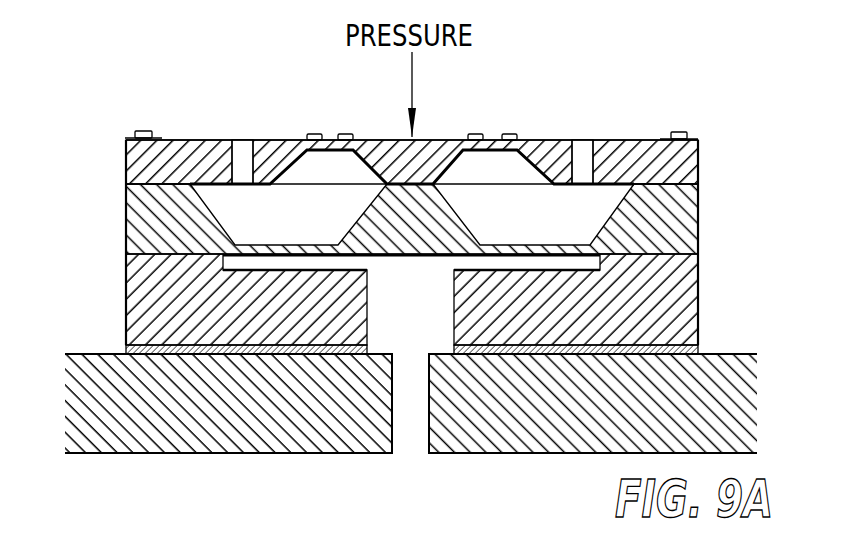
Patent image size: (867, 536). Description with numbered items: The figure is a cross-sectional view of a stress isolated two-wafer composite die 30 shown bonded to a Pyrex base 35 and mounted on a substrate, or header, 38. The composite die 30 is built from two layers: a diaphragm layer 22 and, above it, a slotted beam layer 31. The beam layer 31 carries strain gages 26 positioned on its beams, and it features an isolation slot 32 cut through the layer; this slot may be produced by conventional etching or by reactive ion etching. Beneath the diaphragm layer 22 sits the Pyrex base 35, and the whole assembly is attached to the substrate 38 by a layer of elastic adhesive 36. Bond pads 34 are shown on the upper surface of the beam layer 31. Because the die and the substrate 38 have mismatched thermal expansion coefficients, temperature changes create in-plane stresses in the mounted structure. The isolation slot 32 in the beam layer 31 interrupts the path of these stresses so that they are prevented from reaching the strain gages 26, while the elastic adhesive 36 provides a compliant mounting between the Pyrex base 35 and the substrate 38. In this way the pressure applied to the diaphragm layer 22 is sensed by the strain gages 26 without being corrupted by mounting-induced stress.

The diaphragm layer 22 is at (145, 222).
The strain gages 26 is at (508, 134).
The composite die 30 is at (408, 200).
The slotted beam layer 31 is at (678, 162).
The isolation slot 32 is at (572, 138).
The bond pads 34 is at (766, 125).
The Pyrex base 35 is at (137, 284).
The elastic adhesive 36 is at (663, 344).
The substrate 38 is at (110, 362).